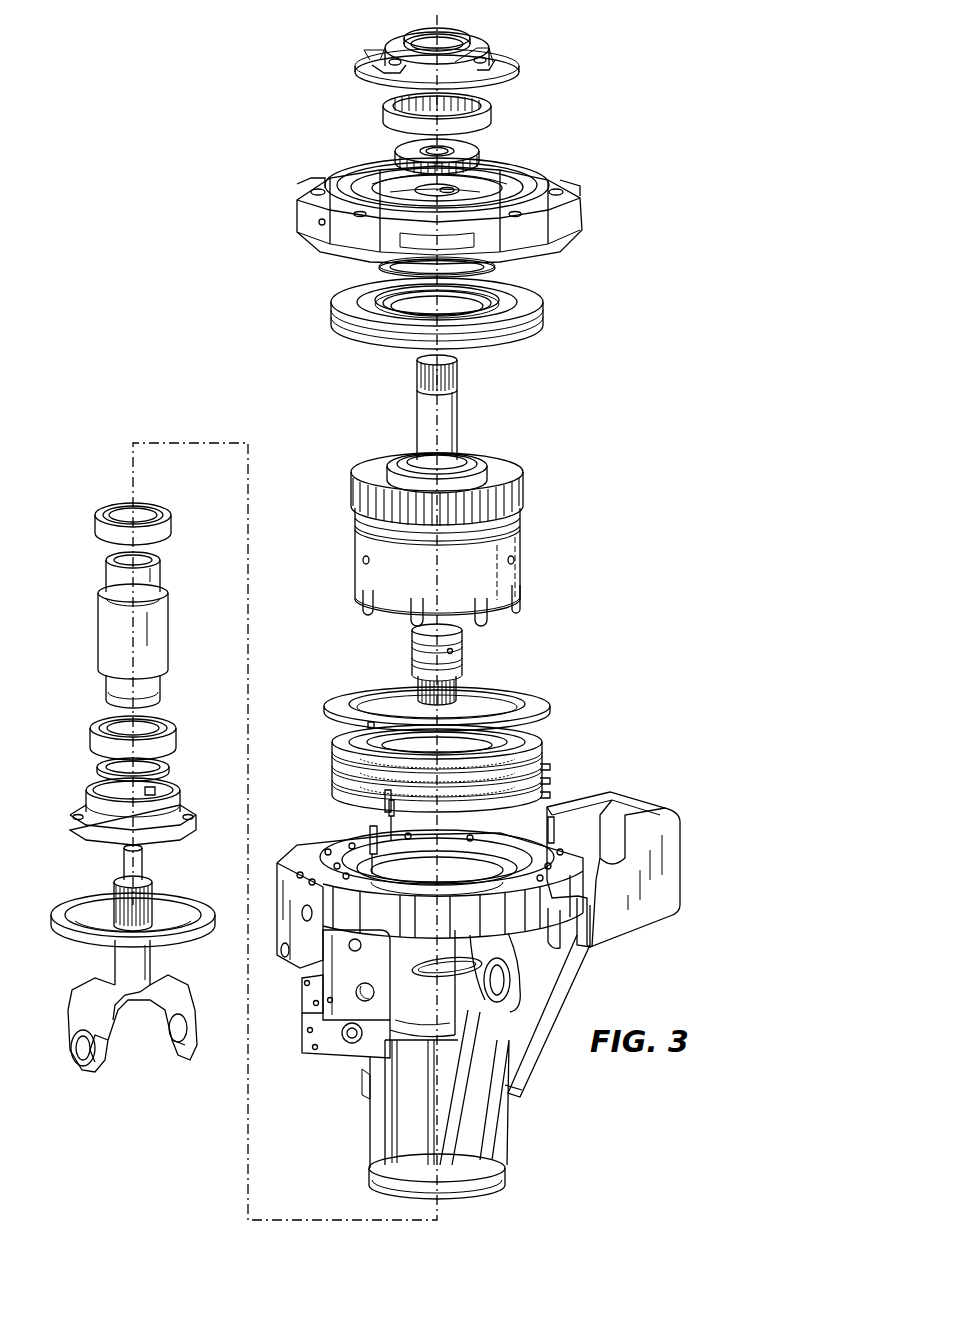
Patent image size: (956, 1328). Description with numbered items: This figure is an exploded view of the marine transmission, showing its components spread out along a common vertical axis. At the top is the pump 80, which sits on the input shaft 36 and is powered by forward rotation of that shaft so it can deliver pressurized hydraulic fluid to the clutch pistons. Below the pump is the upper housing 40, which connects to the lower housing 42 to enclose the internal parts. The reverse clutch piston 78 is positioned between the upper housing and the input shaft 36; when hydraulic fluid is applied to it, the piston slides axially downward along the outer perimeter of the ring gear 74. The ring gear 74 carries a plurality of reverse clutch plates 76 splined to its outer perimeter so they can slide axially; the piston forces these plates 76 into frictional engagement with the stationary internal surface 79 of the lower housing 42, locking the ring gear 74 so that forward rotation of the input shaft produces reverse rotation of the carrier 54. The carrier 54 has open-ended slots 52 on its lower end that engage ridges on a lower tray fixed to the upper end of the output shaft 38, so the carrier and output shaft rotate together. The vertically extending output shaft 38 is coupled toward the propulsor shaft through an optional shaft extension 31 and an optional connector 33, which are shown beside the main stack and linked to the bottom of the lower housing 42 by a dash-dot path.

The pump 80 is at (533, 33).
The upper housing 40 is at (568, 187).
The reverse clutch piston 78 is at (545, 316).
The input shaft 36 is at (469, 424).
The ring gear 74 is at (529, 489).
The carrier 54 is at (520, 539).
The open-ended slots 52 is at (494, 608).
The output shaft 38 is at (477, 702).
The reverse clutch plates 76 is at (542, 742).
The internal surface 79 is at (492, 874).
The lower housing 42 is at (495, 1110).
The shaft extension 31 is at (105, 634).
The connector 33 is at (122, 962).